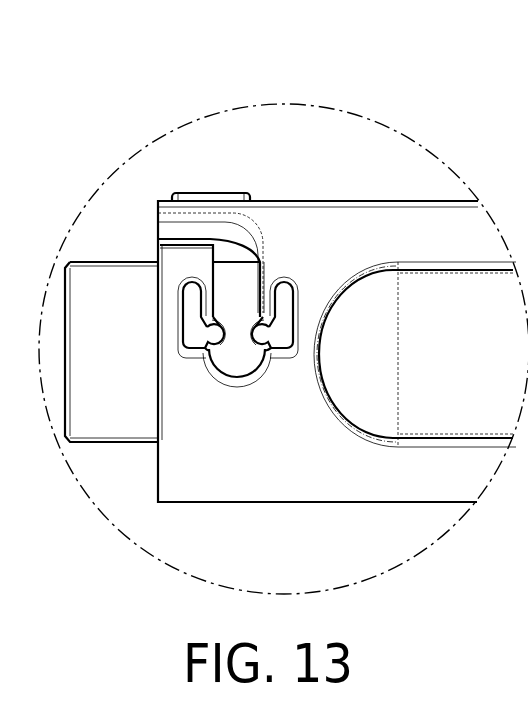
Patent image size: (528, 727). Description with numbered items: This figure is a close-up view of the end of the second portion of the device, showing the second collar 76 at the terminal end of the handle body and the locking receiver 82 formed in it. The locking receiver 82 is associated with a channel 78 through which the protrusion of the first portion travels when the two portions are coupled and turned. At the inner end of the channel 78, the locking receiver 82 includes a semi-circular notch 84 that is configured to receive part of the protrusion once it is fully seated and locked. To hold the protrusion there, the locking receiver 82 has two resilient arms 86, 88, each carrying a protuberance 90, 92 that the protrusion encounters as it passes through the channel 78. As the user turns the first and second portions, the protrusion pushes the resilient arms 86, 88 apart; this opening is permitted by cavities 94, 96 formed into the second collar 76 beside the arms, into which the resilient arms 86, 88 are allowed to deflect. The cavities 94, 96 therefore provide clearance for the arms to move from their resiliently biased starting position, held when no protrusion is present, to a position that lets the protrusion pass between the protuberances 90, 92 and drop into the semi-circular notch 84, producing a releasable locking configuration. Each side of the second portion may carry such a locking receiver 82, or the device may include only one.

The locking receiver 82 is at (298, 143).
The second collar 76 is at (218, 463).
The channel 78 is at (233, 233).
The semi-circular notch 84 is at (241, 380).
The resilient arm 86 is at (292, 283).
The resilient arm 88 is at (205, 305).
The protuberance 90 is at (265, 333).
The protuberance 92 is at (210, 332).
The cavity 94 is at (285, 316).
The cavity 96 is at (197, 325).